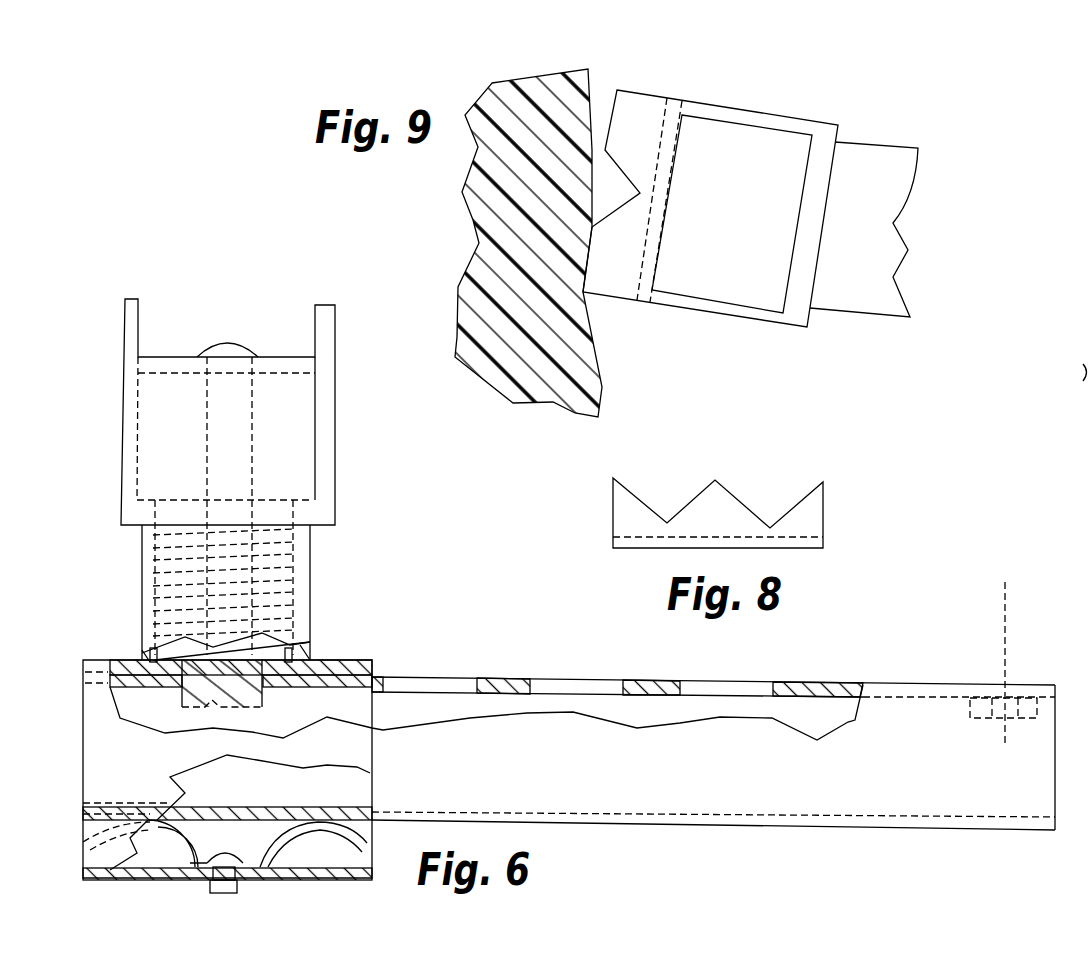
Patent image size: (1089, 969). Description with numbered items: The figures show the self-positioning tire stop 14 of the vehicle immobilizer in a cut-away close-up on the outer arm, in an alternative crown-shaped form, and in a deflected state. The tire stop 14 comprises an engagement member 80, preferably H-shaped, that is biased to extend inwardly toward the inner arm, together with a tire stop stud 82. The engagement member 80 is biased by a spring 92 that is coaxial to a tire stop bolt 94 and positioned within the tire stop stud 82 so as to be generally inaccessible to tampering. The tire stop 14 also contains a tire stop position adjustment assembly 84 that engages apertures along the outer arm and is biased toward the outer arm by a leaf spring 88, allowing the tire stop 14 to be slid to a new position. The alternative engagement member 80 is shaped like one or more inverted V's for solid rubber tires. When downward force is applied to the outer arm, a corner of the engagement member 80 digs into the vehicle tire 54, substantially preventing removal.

In FIG. 9, the self-positioning tire stop 14 is at (787, 191).
In FIG. 6, the self-positioning tire stop 14 is at (286, 453).
In FIG. 9, the vehicle tire 54 is at (593, 73).
In FIG. 9, the engagement member 80 is at (650, 93).
In FIG. 8, the engagement member 80 is at (823, 502).
In FIG. 6, the engagement member 80 is at (138, 320).
In FIG. 9, the tire stop stud 82 is at (870, 142).
In FIG. 6, the tire stop stud 82 is at (310, 592).
In FIG. 6, the tire stop position adjustment assembly 84 is at (290, 688).
In FIG. 6, the leaf spring 88 is at (333, 812).
In FIG. 6, the spring 92 is at (260, 570).
In FIG. 6, the tire stop bolt 94 is at (252, 418).